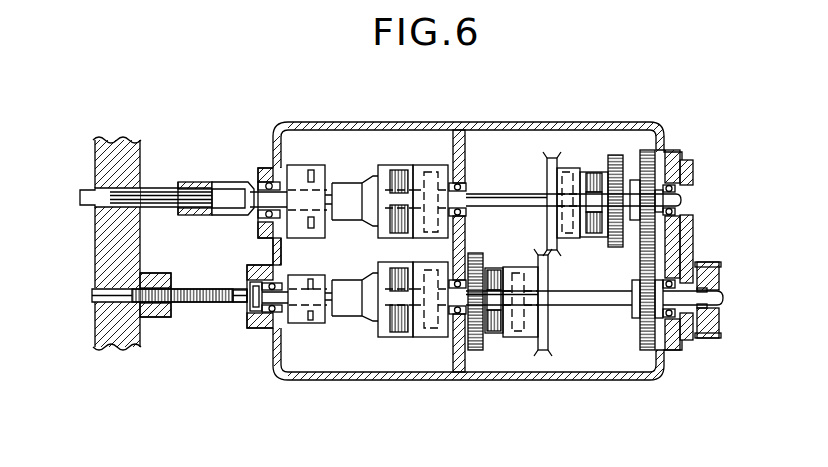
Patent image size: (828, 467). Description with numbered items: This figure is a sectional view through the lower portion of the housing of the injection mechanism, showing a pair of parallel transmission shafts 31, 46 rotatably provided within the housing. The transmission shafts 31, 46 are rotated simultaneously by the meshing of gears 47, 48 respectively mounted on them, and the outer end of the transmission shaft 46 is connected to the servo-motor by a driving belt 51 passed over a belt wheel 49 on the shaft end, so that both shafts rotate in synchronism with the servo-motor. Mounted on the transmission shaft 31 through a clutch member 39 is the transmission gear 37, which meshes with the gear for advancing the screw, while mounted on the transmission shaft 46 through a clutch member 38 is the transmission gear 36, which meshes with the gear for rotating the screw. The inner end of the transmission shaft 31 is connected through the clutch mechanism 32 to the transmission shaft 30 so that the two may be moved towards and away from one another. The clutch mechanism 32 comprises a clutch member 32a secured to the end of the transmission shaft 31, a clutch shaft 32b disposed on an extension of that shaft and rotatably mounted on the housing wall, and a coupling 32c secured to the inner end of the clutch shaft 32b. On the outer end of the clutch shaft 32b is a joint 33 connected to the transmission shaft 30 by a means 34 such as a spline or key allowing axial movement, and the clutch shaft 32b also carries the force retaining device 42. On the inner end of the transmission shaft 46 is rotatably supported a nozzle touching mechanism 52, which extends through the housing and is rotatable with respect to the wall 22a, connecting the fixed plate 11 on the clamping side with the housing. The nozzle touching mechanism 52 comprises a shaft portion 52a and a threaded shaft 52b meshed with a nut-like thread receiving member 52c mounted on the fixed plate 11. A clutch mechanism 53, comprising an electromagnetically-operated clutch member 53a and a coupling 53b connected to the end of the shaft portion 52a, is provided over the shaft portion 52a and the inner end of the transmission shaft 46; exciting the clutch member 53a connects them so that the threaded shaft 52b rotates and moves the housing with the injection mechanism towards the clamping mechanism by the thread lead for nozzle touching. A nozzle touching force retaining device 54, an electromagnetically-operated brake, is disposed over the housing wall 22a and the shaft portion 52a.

The fixed plate 11 is at (120, 152).
The transmission shaft 30 is at (91, 194).
The joint 33 is at (197, 182).
The spline or key means 34 is at (164, 205).
The clutch shaft 32b is at (274, 196).
The force retaining device 42 is at (299, 157).
The coupling 32c is at (372, 181).
The clutch mechanism 32 is at (398, 158).
The clutch member 32a is at (426, 180).
The transmission shaft 31 is at (492, 197).
The clutch member 39 is at (567, 172).
The transmission gear 37 is at (615, 158).
The gear 47 is at (668, 165).
The belt wheel 49 is at (705, 262).
The gear 48 is at (641, 265).
The transmission shaft 46 is at (594, 300).
The driving belt 51 is at (708, 340).
The housing wall 22a is at (283, 259).
The nozzle touching mechanism 52 is at (233, 307).
The shaft portion 52a is at (240, 288).
The threaded shaft 52b is at (199, 291).
The thread receiving member 52c is at (153, 317).
The nozzle touching force retaining device 54 is at (280, 340).
The clutch mechanism 53 is at (369, 337).
The coupling 53b is at (302, 327).
The clutch member 53a is at (418, 340).
The transmission gear 36 is at (476, 350).
The clutch member 38 is at (494, 340).